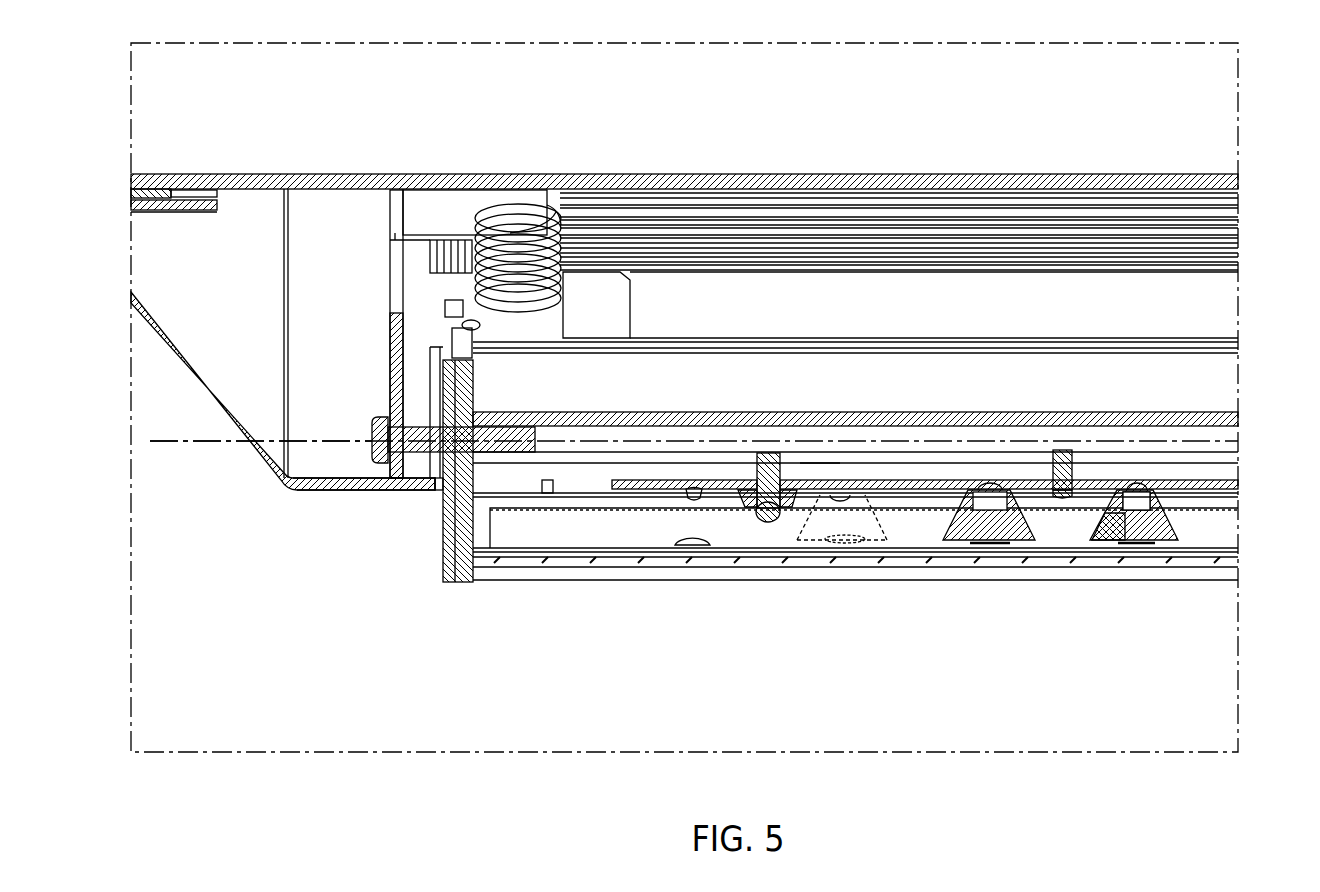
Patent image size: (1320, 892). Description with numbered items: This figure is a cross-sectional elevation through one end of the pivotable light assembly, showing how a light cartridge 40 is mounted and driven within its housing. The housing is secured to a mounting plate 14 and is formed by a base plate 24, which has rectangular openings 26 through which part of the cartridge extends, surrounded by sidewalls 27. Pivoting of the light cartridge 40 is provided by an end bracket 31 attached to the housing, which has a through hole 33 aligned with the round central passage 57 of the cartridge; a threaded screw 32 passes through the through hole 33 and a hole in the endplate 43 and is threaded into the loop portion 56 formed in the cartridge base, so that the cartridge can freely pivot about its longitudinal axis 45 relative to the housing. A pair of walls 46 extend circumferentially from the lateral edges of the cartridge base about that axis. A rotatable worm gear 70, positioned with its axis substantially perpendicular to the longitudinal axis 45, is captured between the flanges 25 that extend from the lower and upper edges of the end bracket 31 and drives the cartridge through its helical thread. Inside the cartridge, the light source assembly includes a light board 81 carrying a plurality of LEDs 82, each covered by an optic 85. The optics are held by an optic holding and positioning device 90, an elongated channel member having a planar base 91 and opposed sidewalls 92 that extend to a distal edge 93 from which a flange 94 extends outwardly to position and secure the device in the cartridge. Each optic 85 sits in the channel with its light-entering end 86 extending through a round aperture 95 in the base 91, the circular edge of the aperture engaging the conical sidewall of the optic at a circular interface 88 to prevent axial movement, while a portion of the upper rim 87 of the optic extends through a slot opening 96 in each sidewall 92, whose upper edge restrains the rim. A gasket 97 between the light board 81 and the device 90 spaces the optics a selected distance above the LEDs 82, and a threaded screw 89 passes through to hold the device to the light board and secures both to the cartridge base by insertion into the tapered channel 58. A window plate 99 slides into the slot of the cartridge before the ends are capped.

The mounting plate 14 is at (272, 174).
The base plate 24 is at (315, 492).
The flange of end bracket 25 is at (473, 210).
The rectangular openings 26 is at (437, 493).
The sidewalls 27 is at (203, 382).
The end bracket 31 is at (390, 328).
The threaded screw 32 is at (283, 447).
The through hole 33 is at (375, 417).
The light cartridge 40 is at (406, 586).
The endplate 43 is at (443, 576).
The longitudinal axis 45 is at (328, 438).
The walls 46 is at (1030, 373).
The loop portion 56 is at (488, 408).
The central passage 57 is at (960, 437).
The tapered channel 58 is at (830, 458).
The worm gear 70 is at (578, 297).
The light board 81 is at (657, 480).
The LED 82 is at (690, 497).
The optic 85 is at (1137, 541).
The light-entering end 86 is at (1173, 490).
The upper rim 87 is at (1170, 541).
The circular interface 88 is at (1173, 515).
The threaded screw 89 is at (820, 458).
The optic holding and positioning device 90 is at (533, 540).
The planar base 91 is at (910, 510).
The sidewalls 92 is at (630, 525).
The distal edge 93 is at (630, 552).
The flange 94 is at (608, 556).
The aperture 95 is at (677, 510).
The slot opening 96 is at (697, 538).
The gasket 97 is at (757, 457).
The window plate 99 is at (953, 560).